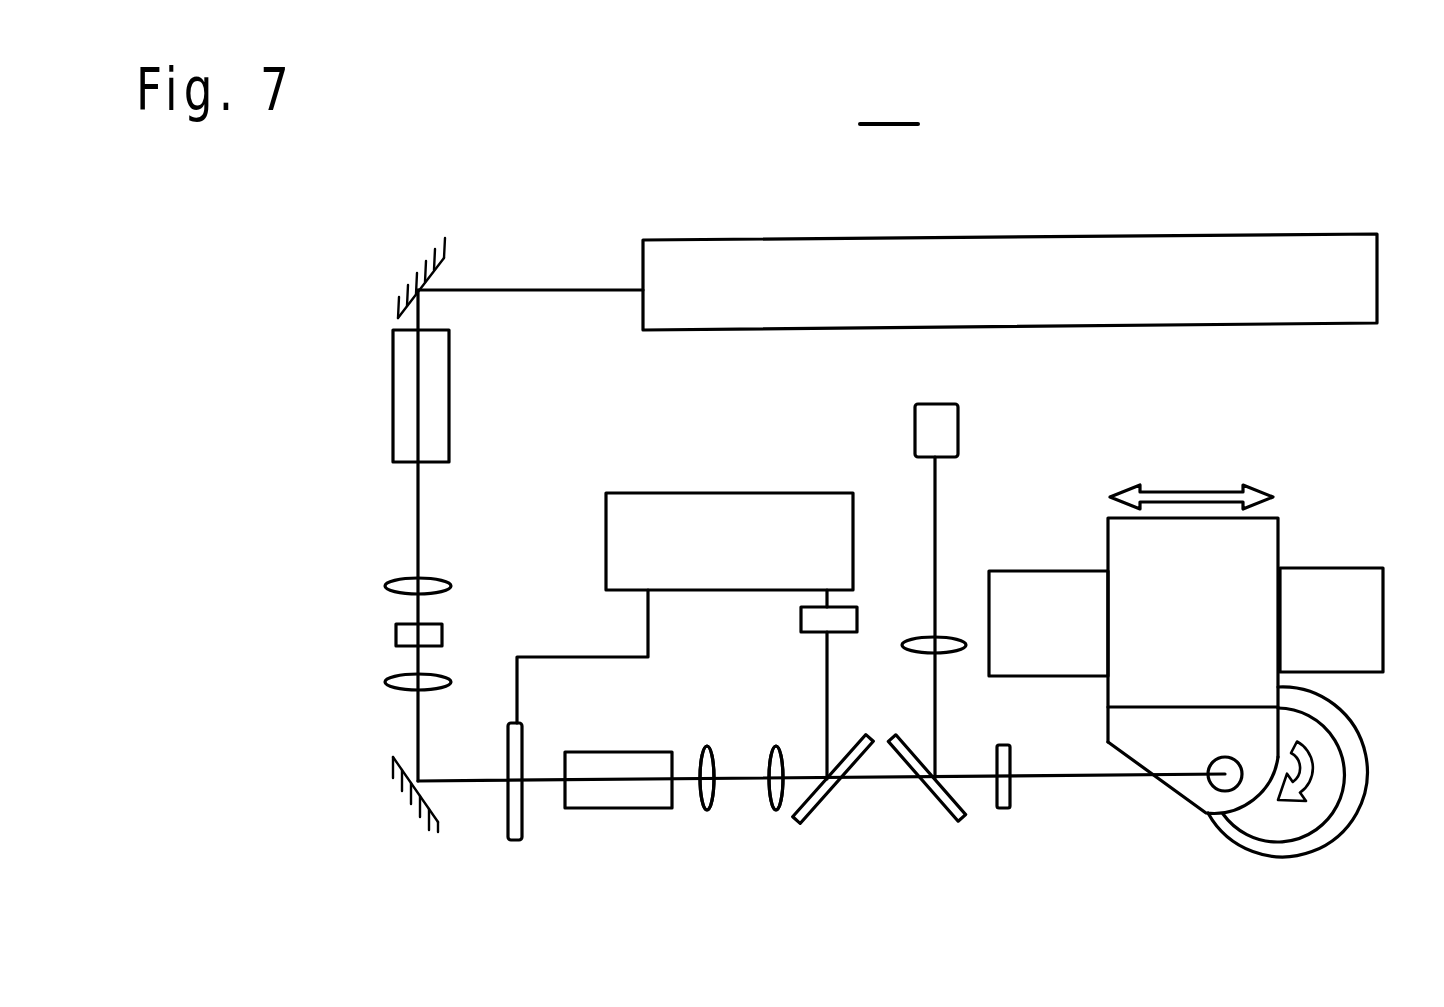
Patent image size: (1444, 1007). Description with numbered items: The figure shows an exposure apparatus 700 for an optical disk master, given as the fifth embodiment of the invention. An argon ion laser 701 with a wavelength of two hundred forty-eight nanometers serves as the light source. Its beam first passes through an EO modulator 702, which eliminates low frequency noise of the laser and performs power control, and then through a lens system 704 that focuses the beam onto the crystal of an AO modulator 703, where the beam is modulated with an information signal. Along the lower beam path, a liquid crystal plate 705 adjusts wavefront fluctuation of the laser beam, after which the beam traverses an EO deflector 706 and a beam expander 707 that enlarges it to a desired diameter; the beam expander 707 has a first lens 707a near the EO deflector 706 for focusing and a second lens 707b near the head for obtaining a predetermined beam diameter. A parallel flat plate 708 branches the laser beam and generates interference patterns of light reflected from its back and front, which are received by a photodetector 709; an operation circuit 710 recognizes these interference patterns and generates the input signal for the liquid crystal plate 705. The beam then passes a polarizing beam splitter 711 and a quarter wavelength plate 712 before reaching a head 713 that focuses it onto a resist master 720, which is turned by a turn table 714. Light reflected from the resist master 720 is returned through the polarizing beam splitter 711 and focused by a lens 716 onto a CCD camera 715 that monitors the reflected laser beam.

The exposure apparatus 700 is at (889, 102).
The argon ion laser 701 is at (1258, 238).
The EO modulator 702 is at (450, 390).
The AO modulator 703 is at (443, 638).
The lens system 704 is at (432, 578).
The liquid crystal plate 705 is at (513, 842).
The EO deflector 706 is at (612, 810).
The beam expander 707 is at (776, 745).
The first lens 707a is at (701, 812).
The second lens 707b is at (770, 812).
The parallel flat plate 708 is at (802, 822).
The photodetector 709 is at (800, 620).
The operation circuit 710 is at (756, 498).
The polarizing beam splitter 711 is at (938, 810).
The ¼ wavelength plate 712 is at (1003, 810).
The head 713 is at (1280, 540).
The turn table 714 is at (1223, 836).
The CCD camera 715 is at (959, 418).
The lens 716 is at (948, 640).
The resist master 720 is at (1297, 728).